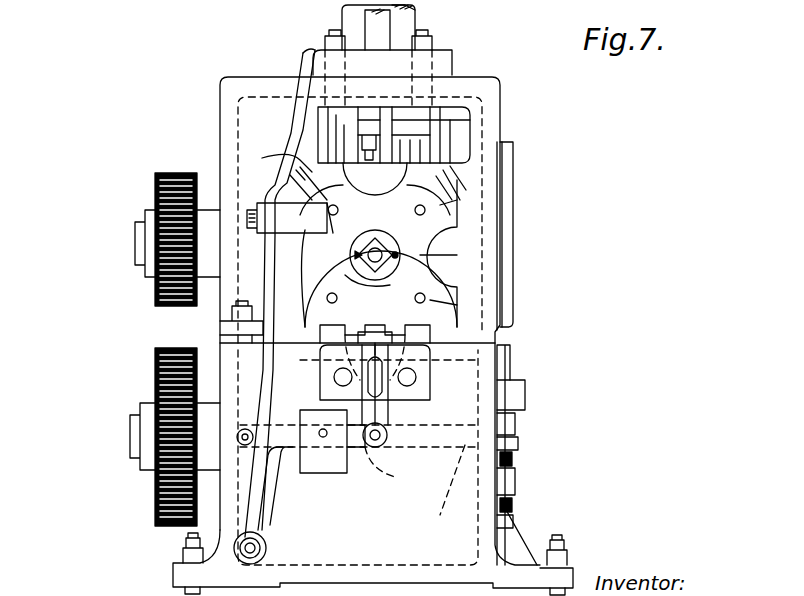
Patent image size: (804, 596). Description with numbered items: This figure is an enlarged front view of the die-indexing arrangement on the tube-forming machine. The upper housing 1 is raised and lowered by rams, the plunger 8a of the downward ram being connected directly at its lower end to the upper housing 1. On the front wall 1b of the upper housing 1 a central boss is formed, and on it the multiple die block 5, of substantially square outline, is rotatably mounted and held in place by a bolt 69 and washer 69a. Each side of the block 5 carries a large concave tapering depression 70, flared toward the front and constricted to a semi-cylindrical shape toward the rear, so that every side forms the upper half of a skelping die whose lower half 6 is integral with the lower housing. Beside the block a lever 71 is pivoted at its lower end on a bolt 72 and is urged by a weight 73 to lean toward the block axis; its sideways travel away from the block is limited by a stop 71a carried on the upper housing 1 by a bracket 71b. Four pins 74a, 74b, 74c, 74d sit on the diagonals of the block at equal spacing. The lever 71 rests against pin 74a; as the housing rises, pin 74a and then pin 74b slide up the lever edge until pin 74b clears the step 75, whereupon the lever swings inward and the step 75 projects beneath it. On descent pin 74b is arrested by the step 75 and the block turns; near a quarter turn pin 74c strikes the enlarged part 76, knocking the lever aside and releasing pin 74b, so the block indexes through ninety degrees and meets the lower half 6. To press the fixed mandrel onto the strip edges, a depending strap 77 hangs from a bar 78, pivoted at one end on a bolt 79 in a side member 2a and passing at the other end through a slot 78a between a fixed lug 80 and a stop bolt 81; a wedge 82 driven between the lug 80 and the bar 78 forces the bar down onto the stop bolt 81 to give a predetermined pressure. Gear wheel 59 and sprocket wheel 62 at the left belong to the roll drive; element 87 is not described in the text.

The upper housing 1 is at (373, 336).
The front wall 1b is at (475, 143).
The side member 2a is at (555, 527).
The multiple die block 5 is at (440, 255).
The lower half of the die 6 is at (417, 388).
The plunger 8a is at (345, 18).
The gear wheel 59 is at (158, 372).
The sprocket wheel 62 is at (172, 173).
The bolt 69 is at (395, 270).
The washer 69a is at (402, 238).
The concave tapering depression 70 is at (420, 183).
The lever 71 is at (291, 133).
The stop 71a is at (238, 195).
The bracket 71b is at (263, 257).
The bolt 72 is at (266, 546).
The weight 73 is at (340, 463).
The pin 74a is at (280, 162).
The pin 74b is at (325, 345).
The pin 74c is at (433, 300).
The pin 74d is at (443, 207).
The step 75 is at (322, 163).
The enlarged part 76 is at (375, 205).
The depending strap 77 is at (408, 470).
The bar 78 is at (445, 491).
The slot 78a is at (512, 458).
The bolt 79 is at (253, 445).
The fixed lug 80 is at (520, 398).
The stop bolt 81 is at (517, 470).
The wedge 82 is at (520, 430).
The bracket plate 87 is at (420, 362).